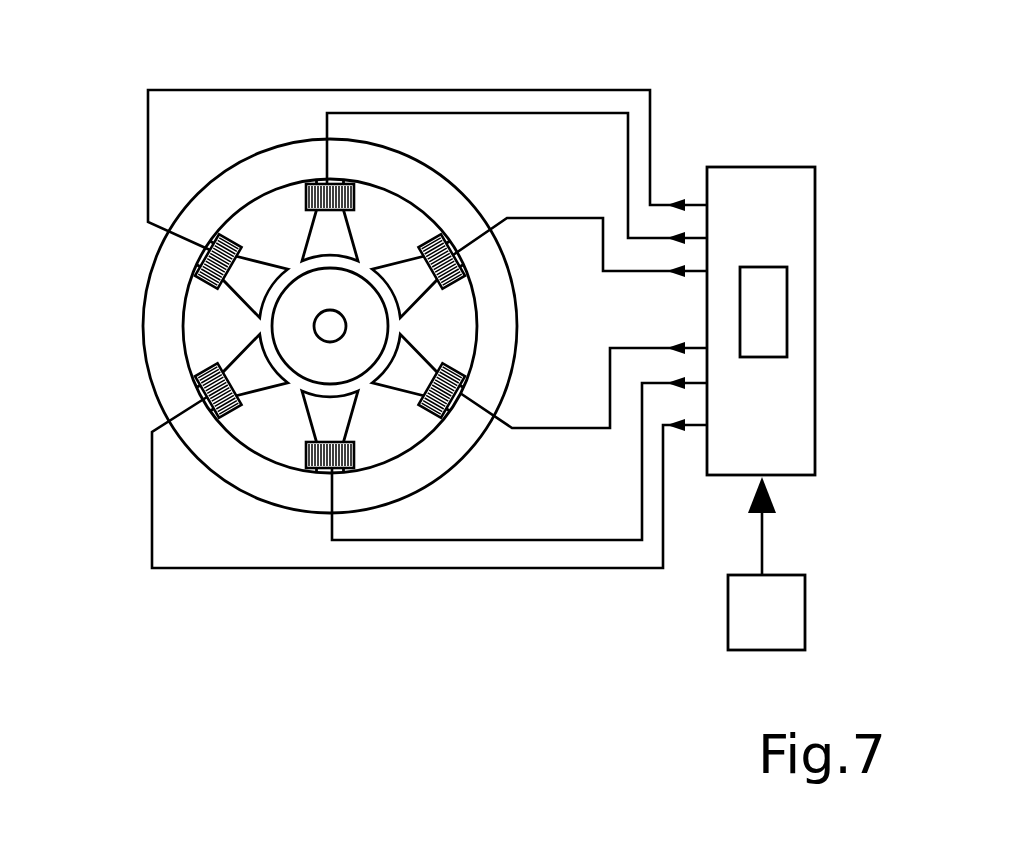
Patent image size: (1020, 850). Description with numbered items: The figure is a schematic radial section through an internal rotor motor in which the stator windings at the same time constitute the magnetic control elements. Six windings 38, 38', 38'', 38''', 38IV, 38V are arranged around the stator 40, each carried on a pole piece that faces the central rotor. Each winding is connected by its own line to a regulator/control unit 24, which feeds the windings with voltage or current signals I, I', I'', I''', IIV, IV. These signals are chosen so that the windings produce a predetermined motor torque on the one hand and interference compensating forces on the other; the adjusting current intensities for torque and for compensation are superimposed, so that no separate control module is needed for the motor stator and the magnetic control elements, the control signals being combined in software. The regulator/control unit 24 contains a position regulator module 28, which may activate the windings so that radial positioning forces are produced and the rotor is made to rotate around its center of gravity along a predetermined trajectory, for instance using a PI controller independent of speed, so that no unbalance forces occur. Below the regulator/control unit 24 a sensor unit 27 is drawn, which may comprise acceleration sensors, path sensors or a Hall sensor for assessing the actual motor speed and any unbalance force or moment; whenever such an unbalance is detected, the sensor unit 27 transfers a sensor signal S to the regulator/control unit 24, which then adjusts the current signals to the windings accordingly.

The stator 40 is at (134, 425).
The winding 38 is at (405, 171).
The winding 38' is at (509, 216).
The winding 38'' is at (447, 501).
The winding 38''' is at (301, 560).
The winding 38IV is at (237, 408).
The winding 38V is at (213, 278).
The regulator/control unit 24 is at (815, 224).
The position regulator module 28 is at (787, 322).
The sensor unit 27 is at (805, 618).
The sensor signal S is at (762, 545).
The current signal I is at (427, 170).
The current signal I' is at (517, 135).
The current signal I'' is at (580, 275).
The current signal I''' is at (583, 385).
The current signal IIV is at (588, 496).
The current signal IV is at (612, 568).